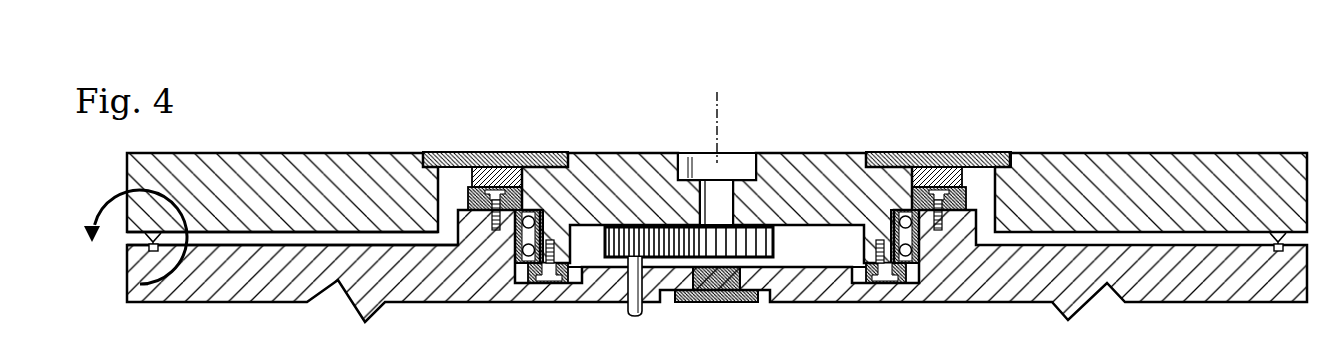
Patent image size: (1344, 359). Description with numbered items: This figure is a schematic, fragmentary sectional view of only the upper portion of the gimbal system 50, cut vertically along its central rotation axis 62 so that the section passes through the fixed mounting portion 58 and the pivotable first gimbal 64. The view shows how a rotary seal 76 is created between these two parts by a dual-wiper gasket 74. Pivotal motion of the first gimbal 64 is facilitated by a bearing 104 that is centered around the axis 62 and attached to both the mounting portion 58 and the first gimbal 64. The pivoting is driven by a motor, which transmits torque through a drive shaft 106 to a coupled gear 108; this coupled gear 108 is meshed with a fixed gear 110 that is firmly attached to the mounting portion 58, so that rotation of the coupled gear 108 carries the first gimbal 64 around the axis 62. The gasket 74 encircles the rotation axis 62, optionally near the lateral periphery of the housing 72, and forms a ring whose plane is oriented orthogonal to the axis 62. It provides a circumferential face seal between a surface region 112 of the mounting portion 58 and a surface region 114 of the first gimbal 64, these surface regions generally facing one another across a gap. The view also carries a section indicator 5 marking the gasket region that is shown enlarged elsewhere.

The gimbal system 50 is at (99, 166).
The mounting portion 58 is at (259, 194).
The section indicator 5 is at (135, 237).
The rotation axis 62 is at (722, 138).
The first gimbal 64 is at (702, 271).
The housing 72 is at (1314, 173).
The rotary seal 76 is at (1315, 237).
The dual-wiper gasket 74 is at (142, 237).
The bearing 104 is at (912, 252).
The drive shaft 106 is at (627, 285).
The coupled gear 108 is at (603, 242).
The fixed gear 110 is at (776, 242).
The surface region of mounting portion 112 is at (246, 236).
The surface region of first gimbal 114 is at (306, 238).